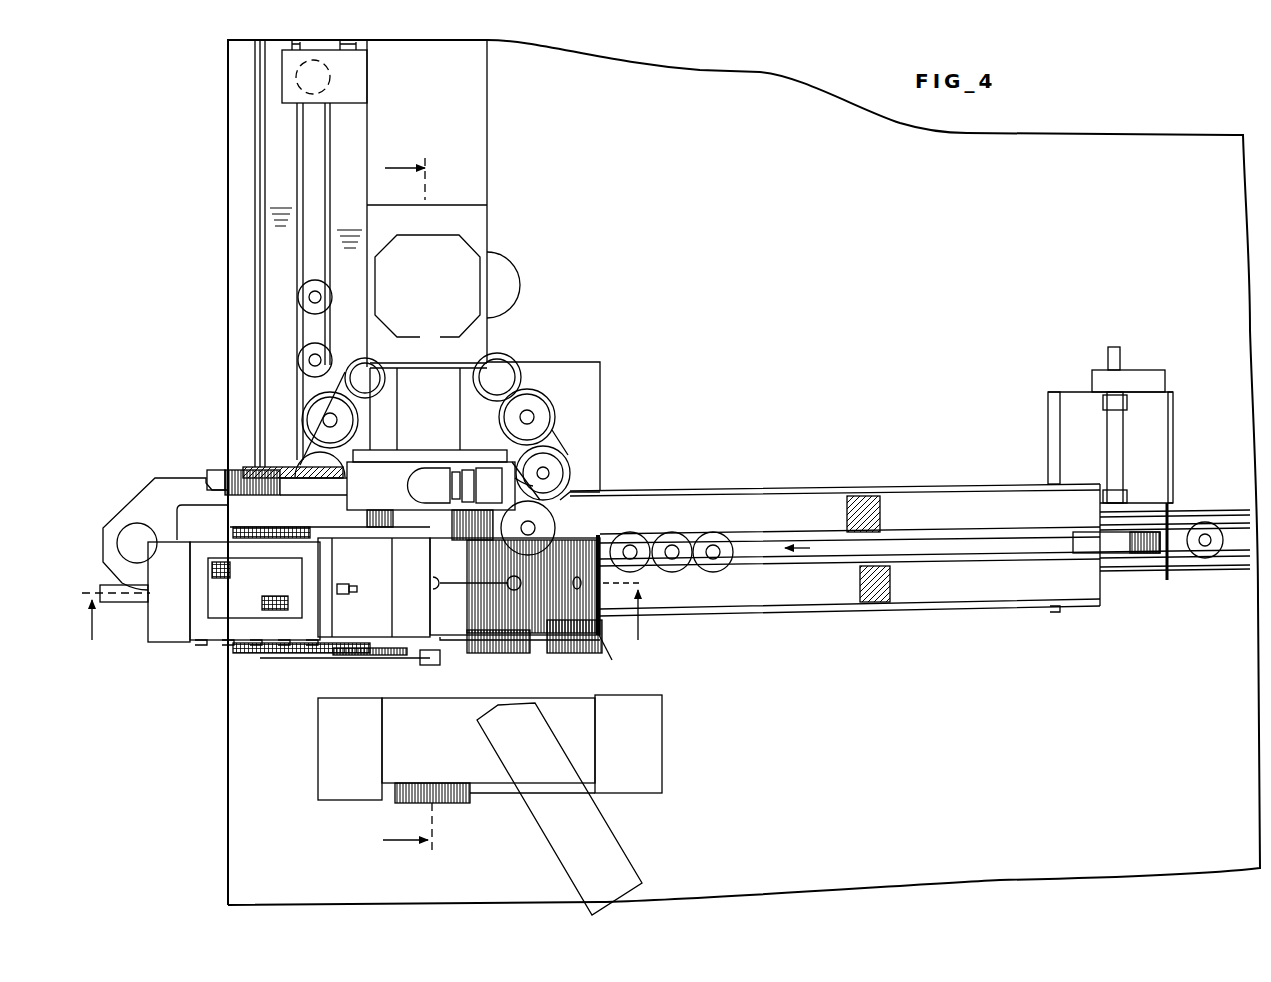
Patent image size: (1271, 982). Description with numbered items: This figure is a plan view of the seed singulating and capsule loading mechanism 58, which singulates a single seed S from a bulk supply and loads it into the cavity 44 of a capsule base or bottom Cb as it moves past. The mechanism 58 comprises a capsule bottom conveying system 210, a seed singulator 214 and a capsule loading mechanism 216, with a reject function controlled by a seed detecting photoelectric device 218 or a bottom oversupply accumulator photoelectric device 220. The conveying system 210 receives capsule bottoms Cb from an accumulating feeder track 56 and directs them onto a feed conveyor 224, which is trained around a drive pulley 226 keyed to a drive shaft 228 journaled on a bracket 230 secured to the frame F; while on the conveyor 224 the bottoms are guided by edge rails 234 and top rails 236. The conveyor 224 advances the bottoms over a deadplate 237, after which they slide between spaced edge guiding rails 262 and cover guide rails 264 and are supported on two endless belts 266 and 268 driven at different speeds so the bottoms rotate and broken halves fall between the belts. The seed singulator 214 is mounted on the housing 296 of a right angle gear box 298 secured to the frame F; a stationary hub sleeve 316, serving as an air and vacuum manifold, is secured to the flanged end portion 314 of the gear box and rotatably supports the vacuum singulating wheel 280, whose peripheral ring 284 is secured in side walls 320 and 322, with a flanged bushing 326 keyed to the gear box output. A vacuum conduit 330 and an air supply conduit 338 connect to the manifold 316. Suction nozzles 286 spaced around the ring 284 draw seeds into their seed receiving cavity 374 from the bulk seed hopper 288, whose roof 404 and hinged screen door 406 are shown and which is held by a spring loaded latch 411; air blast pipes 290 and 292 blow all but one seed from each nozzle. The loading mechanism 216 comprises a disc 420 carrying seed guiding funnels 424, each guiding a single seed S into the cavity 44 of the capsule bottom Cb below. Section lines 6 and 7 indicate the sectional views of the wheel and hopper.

The frame F is at (762, 70).
The bottom oversupply accumulator photoelectric device 220 is at (280, 76).
The edge guiding rails 262 is at (258, 208).
The cover guide rails 264 is at (286, 133).
The endless belt 266 is at (300, 228).
The endless belt 268 is at (335, 225).
The right angle gear box 298 is at (450, 277).
The section line for FIG. 6 is at (416, 509).
The section line for FIG. 7 is at (363, 625).
The seed S is at (322, 298).
The cavity 44 is at (306, 310).
The capsule base or bottom Cb is at (330, 306).
The seed guiding funnels or cones 424 is at (372, 412).
The housing 296 is at (500, 372).
The capsule loading mechanism 216 is at (560, 392).
The disc 420 is at (540, 378).
The deadplate 237 is at (600, 363).
The flanged end portion 314 is at (426, 452).
The stationary hub sleeve 316 is at (392, 500).
The vacuum conduit 330 is at (562, 462).
The air supply conduit 338 is at (535, 488).
The flanged end or side wall 320 is at (566, 532).
The vacuum singulating drum or wheel 280 is at (616, 546).
The spring loaded latch 411 is at (165, 478).
The bulk seed hopper 288 is at (162, 532).
The first air blast pipe 290 is at (120, 583).
The seed singulating and capsule loading mechanism 58 is at (213, 665).
The hinged screen door 406 is at (208, 550).
The second air blast pipe 292 is at (358, 586).
The seed receiving cavity 374 is at (510, 590).
The single seed orifice plugs or suction nozzles 286 is at (436, 583).
The roof 404 is at (398, 632).
The annular peripheral flange or ring 284 is at (452, 640).
The flanged bushing 326 is at (500, 650).
The flanged end or side wall 322 is at (552, 645).
The seed singulator 214 is at (592, 640).
The seed detecting photoelectric device 218 is at (380, 746).
The capsule bottom conveying system 210 is at (875, 535).
The feed conveyor 224 is at (757, 542).
The top rails 236 is at (820, 492).
The edge rails 234 is at (855, 490).
The bracket 230 is at (1060, 420).
The drive shaft 228 is at (1108, 355).
The accumulating feeder track 56 is at (1212, 508).
The drive pulley 226 is at (1092, 558).